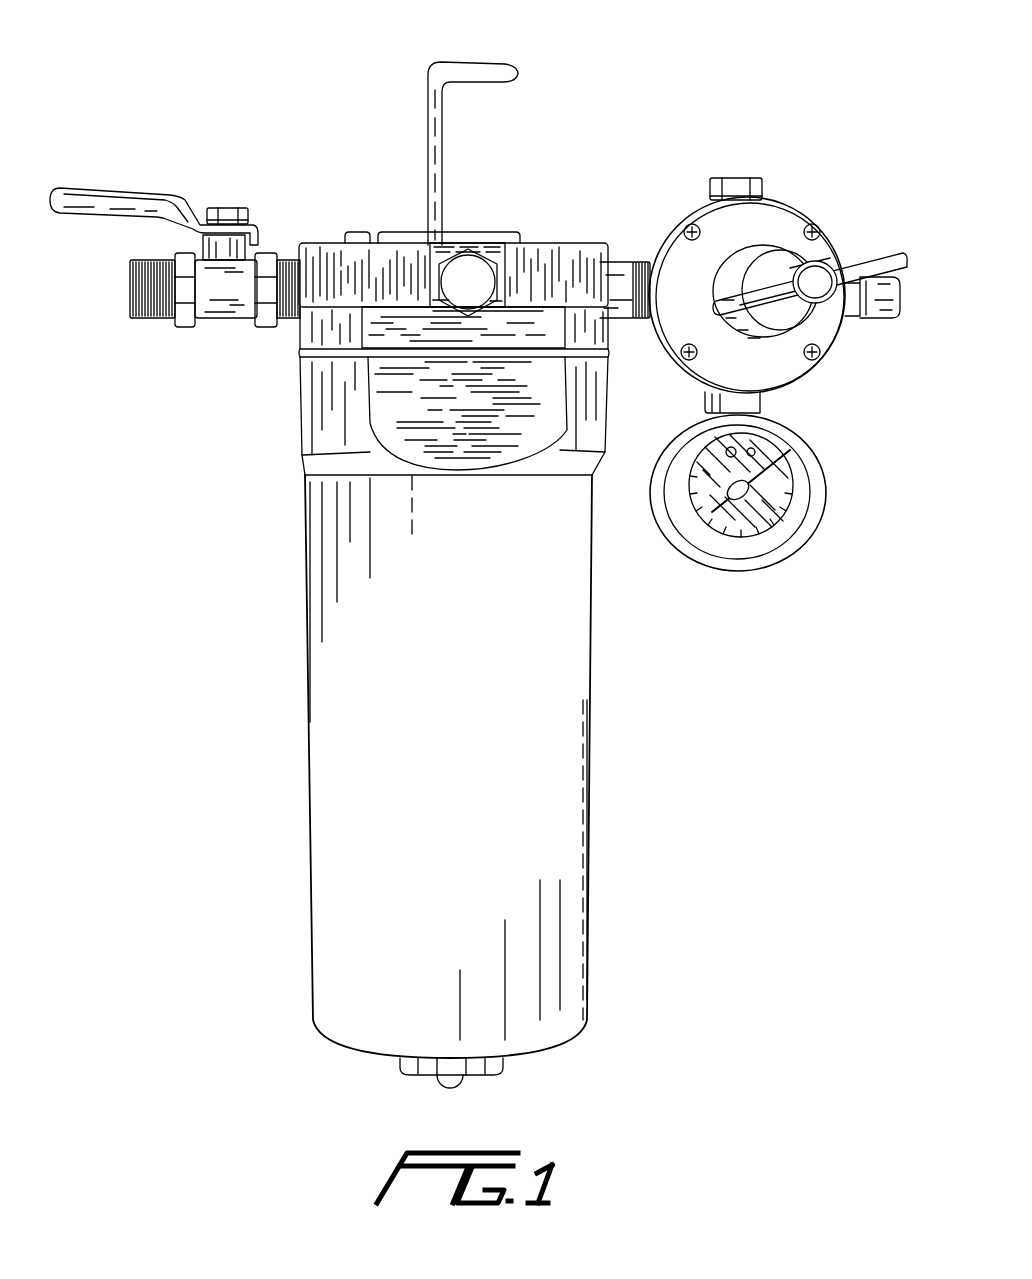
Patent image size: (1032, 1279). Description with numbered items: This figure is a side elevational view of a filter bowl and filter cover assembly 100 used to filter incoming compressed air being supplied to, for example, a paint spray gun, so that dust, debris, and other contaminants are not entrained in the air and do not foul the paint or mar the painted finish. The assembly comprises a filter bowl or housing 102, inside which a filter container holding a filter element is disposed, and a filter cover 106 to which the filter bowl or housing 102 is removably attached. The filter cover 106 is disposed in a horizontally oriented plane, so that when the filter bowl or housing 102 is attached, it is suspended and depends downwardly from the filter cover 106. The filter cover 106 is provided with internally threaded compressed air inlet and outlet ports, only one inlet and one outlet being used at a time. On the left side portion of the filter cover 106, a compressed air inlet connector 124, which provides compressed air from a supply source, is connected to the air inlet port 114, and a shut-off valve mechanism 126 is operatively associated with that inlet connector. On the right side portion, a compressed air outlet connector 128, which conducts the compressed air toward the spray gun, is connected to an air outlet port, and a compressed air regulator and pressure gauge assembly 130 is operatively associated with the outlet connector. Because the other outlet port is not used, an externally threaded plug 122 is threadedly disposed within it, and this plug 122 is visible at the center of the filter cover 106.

The filter bowl and filter cover assembly 100 is at (675, 121).
The filter bowl or housing 102 is at (572, 787).
The filter cover 106 is at (421, 268).
The air inlet port 114 is at (175, 242).
The externally threaded plug 122 is at (457, 292).
The compressed air inlet connector 124 is at (157, 313).
The shut-off valve mechanism 126 is at (168, 194).
The compressed air outlet connector 128 is at (627, 277).
The compressed air regulator and pressure gauge assembly 130 is at (815, 520).